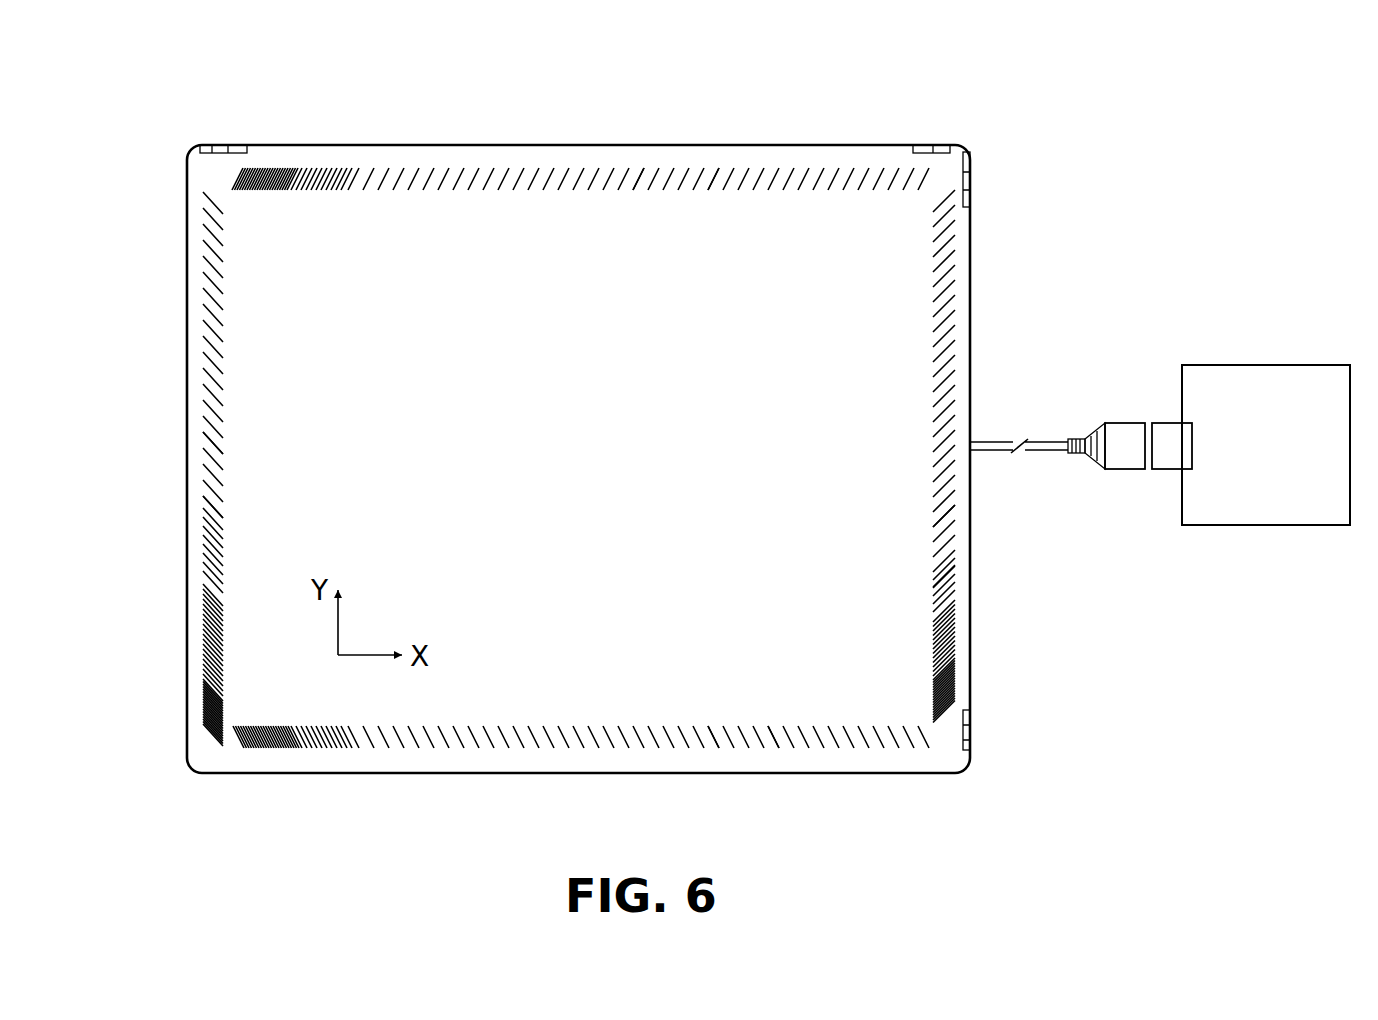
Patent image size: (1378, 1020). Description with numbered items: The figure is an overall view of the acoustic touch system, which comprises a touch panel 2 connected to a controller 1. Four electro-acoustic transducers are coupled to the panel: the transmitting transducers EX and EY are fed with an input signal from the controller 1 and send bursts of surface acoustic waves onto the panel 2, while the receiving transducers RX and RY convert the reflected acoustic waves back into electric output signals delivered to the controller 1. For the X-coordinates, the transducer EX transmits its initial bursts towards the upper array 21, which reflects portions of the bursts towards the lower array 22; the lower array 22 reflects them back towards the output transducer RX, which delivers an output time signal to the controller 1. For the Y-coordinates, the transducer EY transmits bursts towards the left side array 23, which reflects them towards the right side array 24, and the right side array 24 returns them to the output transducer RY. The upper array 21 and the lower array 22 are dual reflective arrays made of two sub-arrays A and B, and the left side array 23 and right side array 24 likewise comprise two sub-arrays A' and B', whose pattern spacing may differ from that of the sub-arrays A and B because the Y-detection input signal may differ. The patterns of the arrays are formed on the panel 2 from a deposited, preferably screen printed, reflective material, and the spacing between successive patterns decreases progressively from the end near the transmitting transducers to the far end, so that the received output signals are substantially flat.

The controller 1 is at (1259, 365).
The touch panel 2 is at (199, 194).
The upper array 21 is at (426, 174).
The lower array 22 is at (871, 747).
The left side array 23 is at (208, 673).
The right side array 24 is at (949, 328).
The transmitting transducer EY is at (222, 145).
The receiving transducer RY is at (943, 146).
The transmitting transducer EX is at (970, 178).
The receiving transducer RX is at (972, 737).
The sub-array A is at (697, 462).
The sub-array B is at (767, 462).
The sub-array A' is at (582, 466).
The sub-array B' is at (582, 529).